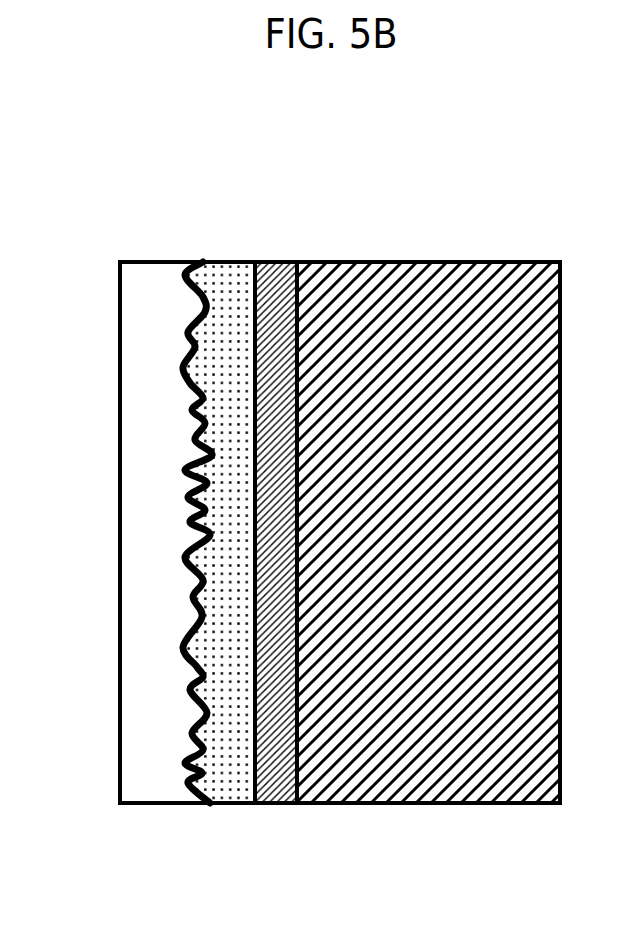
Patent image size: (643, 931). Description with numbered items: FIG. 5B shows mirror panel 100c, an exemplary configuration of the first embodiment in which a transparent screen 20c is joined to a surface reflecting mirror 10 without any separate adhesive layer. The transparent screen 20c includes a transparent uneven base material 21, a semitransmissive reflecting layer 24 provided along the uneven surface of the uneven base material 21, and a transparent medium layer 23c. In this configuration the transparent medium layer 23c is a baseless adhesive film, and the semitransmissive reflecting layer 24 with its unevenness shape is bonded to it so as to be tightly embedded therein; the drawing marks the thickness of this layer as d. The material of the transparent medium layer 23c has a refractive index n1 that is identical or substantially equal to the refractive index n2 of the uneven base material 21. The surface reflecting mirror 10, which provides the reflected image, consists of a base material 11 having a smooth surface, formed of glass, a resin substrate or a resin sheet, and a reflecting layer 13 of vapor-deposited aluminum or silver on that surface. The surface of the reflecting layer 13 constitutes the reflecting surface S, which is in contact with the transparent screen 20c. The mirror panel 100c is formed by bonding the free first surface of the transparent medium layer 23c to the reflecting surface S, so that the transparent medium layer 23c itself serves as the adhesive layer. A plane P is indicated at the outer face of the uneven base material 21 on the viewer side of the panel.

The mirror panel 100c is at (340, 822).
The surface reflecting mirror 10 is at (562, 192).
The base material 11 is at (402, 262).
The reflecting layer 13 is at (268, 262).
The transparent screen 20c is at (97, 192).
The uneven base material 21 is at (146, 262).
The transparent medium layer 23c is at (237, 262).
The semitransmissive reflecting layer 24 is at (203, 262).
The reference plane P is at (118, 312).
The reflecting surface S is at (252, 690).
The refractive index of transparent medium layer n1 is at (223, 378).
The refractive index of uneven base material n2 is at (150, 378).
The thickness d is at (197, 720).